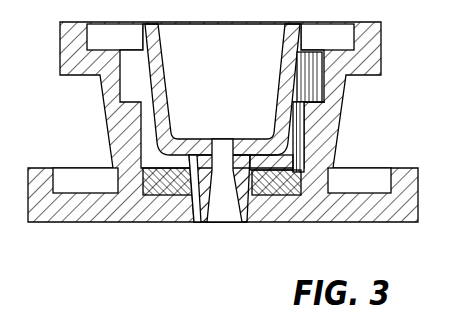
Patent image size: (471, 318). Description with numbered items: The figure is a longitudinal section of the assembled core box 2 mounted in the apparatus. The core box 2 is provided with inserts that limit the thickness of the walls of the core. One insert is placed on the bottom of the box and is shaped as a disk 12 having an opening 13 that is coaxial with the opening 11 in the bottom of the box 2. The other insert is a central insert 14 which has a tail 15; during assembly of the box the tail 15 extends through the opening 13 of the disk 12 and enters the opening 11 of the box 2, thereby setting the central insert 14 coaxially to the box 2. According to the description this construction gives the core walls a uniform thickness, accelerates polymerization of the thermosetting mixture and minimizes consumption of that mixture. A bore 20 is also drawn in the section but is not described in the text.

The core box 2 is at (108, 223).
The opening 11 is at (256, 212).
The disk 12 is at (185, 155).
The opening 13 is at (195, 222).
The central insert 14 is at (162, 74).
The tail 15 is at (240, 223).
The bore 20 is at (228, 222).